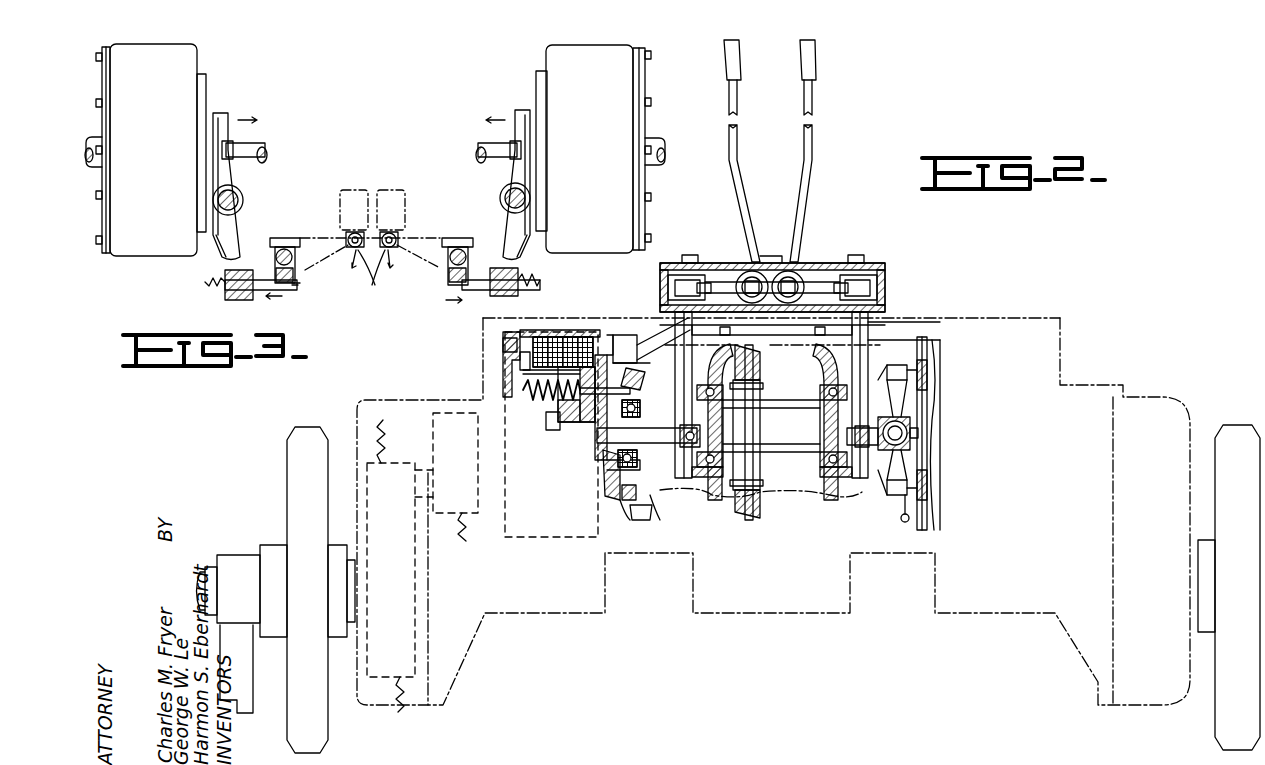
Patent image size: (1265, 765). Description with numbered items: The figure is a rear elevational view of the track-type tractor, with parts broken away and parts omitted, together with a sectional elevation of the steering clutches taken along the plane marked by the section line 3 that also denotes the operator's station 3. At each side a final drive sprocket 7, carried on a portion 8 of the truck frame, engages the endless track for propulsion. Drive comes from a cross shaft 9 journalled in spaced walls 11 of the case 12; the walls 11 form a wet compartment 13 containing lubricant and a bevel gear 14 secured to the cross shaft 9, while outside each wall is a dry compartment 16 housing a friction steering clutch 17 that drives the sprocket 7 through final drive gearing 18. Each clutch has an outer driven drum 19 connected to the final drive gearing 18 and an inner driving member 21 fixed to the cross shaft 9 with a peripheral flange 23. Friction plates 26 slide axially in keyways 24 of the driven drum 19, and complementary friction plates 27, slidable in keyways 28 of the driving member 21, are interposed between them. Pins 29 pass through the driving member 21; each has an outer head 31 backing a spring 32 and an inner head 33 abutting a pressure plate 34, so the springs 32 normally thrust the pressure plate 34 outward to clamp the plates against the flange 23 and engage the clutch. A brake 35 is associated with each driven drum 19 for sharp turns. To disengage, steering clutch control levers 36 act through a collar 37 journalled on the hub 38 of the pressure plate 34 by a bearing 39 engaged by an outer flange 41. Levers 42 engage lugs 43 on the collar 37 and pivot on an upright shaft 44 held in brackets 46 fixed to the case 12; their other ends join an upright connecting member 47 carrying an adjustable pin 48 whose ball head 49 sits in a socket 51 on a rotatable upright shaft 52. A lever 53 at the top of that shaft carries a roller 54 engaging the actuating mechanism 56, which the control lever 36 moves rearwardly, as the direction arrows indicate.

In FIG. 2, the operator's station 3 is at (458, 322).
In FIG. 2, the final drive sprocket 7 is at (288, 466).
In FIG. 2, the truck frame portion 8 is at (255, 714).
In FIG. 3, the cross shaft 9 is at (264, 157).
In FIG. 2, the cross shaft 9 is at (812, 418).
In FIG. 2, the spaced walls 11 is at (722, 480).
In FIG. 2, the case 12 is at (816, 614).
In FIG. 2, the wet compartment 13 is at (772, 377).
In FIG. 2, the bevel gear 14 is at (760, 358).
In FIG. 2, the dry compartment 16 is at (715, 510).
In FIG. 3, the friction steering clutch 17 is at (152, 262).
In FIG. 2, the friction steering clutch 17 is at (506, 335).
In FIG. 2, the final drive gearing 18 is at (397, 422).
In FIG. 2, the driven drum 19 is at (613, 337).
In FIG. 2, the driving member 21 is at (582, 420).
In FIG. 2, the peripheral flange 23 is at (522, 374).
In FIG. 2, the keyways 24 is at (538, 362).
In FIG. 2, the friction plates 26 is at (545, 330).
In FIG. 2, the friction plates 27 is at (574, 337).
In FIG. 2, the keyways 28 is at (530, 374).
In FIG. 2, the pins 29 is at (533, 392).
In FIG. 2, the head 31 is at (548, 415).
In FIG. 2, the spring 32 is at (560, 400).
In FIG. 2, the head 33 is at (630, 392).
In FIG. 3, the pressure plate 34 is at (203, 80).
In FIG. 2, the pressure plate 34 is at (604, 420).
In FIG. 2, the brake 35 is at (560, 337).
In FIG. 2, the steering clutch control lever 36 is at (722, 60).
In FIG. 3, the collar 37 is at (216, 112).
In FIG. 2, the collar 37 is at (642, 378).
In FIG. 2, the hub 38 is at (638, 418).
In FIG. 2, the bearing 39 is at (624, 494).
In FIG. 2, the outer flange 41 is at (608, 470).
In FIG. 3, the levers 42 is at (226, 240).
In FIG. 2, the levers 42 is at (920, 496).
In FIG. 3, the lugs 43 is at (240, 150).
In FIG. 2, the lugs 43 is at (650, 520).
In FIG. 3, the upright shaft 44 is at (242, 198).
In FIG. 2, the upright shaft 44 is at (920, 520).
In FIG. 2, the brackets 46 is at (625, 337).
In FIG. 3, the connecting member 47 is at (226, 292).
In FIG. 2, the connecting member 47 is at (885, 478).
In FIG. 3, the pin 48 is at (247, 302).
In FIG. 2, the pin 48 is at (920, 436).
In FIG. 3, the ball head 49 is at (290, 292).
In FIG. 3, the socket 51 is at (300, 284).
In FIG. 2, the socket 51 is at (672, 446).
In FIG. 3, the upright shaft 52 is at (284, 244).
In FIG. 2, the upright shaft 52 is at (692, 462).
In FIG. 3, the lever 53 is at (322, 268).
In FIG. 2, the lever 53 is at (700, 278).
In FIG. 3, the roller 54 is at (370, 262).
In FIG. 2, the roller 54 is at (748, 276).
In FIG. 3, the actuating mechanism 56 is at (340, 196).
In FIG. 2, the actuating mechanism 56 is at (782, 272).